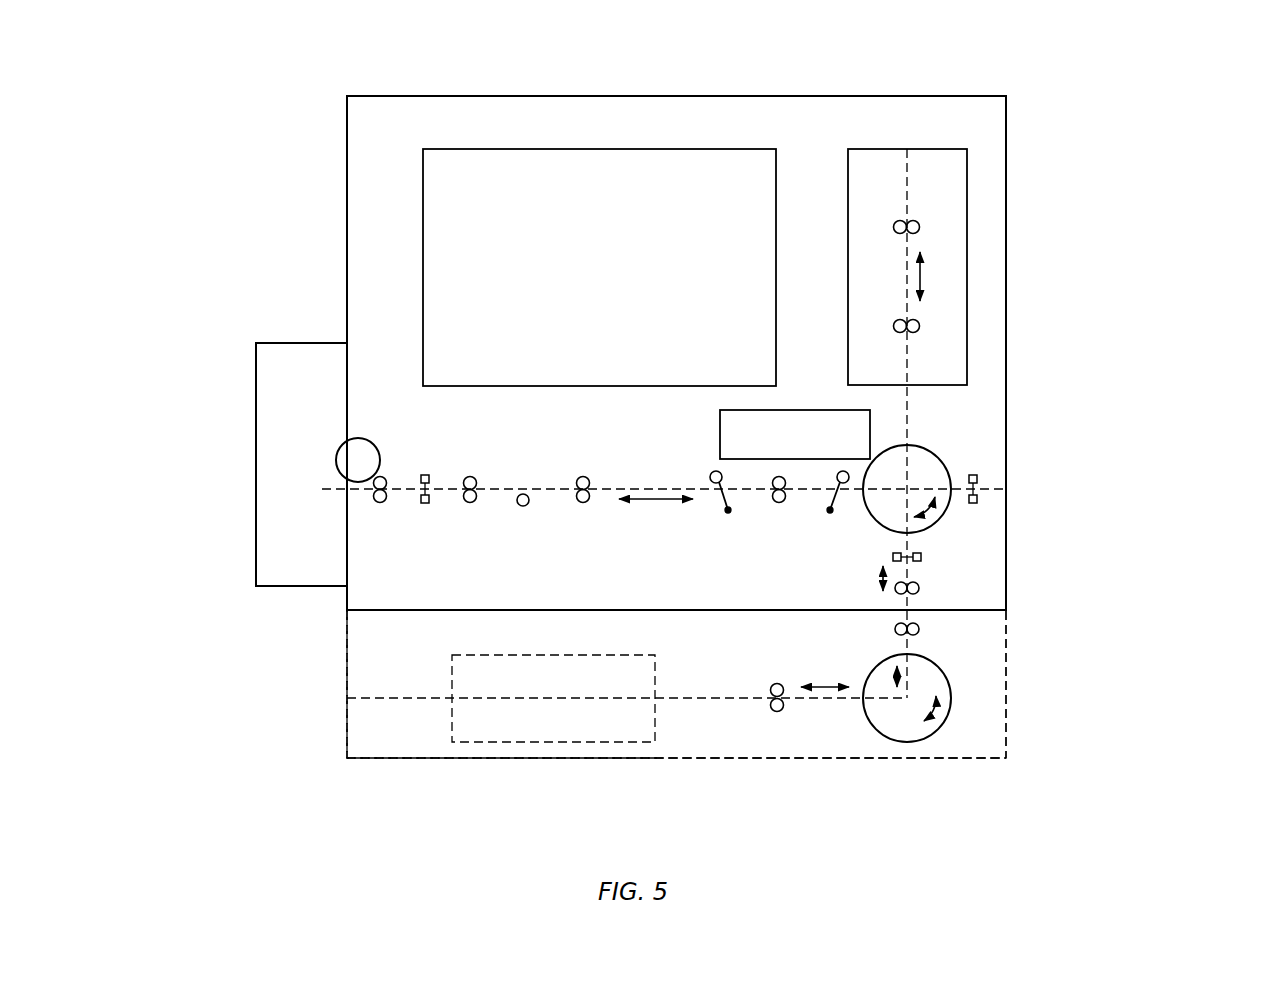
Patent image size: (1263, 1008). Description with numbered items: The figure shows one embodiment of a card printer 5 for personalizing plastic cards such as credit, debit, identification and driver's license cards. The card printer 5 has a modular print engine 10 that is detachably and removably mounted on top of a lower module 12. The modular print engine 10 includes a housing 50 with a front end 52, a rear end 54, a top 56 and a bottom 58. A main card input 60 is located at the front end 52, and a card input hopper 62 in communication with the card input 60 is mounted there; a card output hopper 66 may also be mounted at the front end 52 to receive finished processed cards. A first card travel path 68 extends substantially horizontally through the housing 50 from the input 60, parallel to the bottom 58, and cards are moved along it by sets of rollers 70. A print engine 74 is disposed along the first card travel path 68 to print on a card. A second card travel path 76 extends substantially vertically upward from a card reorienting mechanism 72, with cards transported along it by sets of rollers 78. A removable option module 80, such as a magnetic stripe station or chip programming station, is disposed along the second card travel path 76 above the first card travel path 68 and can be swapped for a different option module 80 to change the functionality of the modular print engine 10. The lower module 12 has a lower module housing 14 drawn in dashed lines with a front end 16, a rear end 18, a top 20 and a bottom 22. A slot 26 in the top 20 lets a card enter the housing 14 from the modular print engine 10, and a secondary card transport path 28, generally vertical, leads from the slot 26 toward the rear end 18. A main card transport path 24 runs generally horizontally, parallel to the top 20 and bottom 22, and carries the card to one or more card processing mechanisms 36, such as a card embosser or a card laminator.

The card printer 5 is at (1194, 92).
The modular print engine 10 is at (262, 181).
The lower module 12 is at (332, 661).
The lower module housing 14 is at (1013, 643).
The front end 16 is at (347, 628).
The rear end 18 is at (1006, 698).
The top 20 is at (395, 612).
The bottom 22 is at (407, 760).
The main card transport path 24 is at (744, 697).
The slot 26 is at (905, 613).
The secondary card transport path 28 is at (905, 652).
The card processing mechanism 36 is at (658, 677).
The housing 50 is at (438, 92).
The front end 52 is at (347, 143).
The rear end 54 is at (1006, 275).
The top 56 is at (495, 96).
The bottom 58 is at (519, 609).
The main card input 60 is at (646, 489).
The card input hopper 62 is at (256, 375).
The card output hopper 66 is at (271, 565).
The first card travel path 68 is at (608, 492).
The sets of rollers 70 is at (380, 503).
The card reorienting mechanism 72 is at (943, 518).
The print engine 74 is at (776, 268).
The second card travel path 76 is at (907, 418).
The sets of rollers 78 is at (921, 228).
The removable option module 80 is at (848, 185).